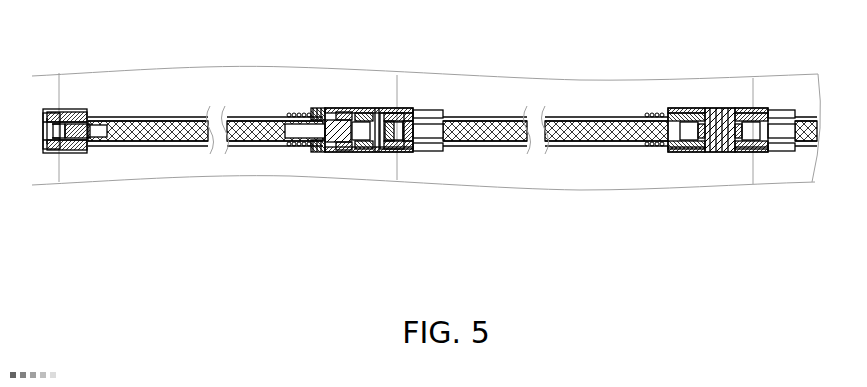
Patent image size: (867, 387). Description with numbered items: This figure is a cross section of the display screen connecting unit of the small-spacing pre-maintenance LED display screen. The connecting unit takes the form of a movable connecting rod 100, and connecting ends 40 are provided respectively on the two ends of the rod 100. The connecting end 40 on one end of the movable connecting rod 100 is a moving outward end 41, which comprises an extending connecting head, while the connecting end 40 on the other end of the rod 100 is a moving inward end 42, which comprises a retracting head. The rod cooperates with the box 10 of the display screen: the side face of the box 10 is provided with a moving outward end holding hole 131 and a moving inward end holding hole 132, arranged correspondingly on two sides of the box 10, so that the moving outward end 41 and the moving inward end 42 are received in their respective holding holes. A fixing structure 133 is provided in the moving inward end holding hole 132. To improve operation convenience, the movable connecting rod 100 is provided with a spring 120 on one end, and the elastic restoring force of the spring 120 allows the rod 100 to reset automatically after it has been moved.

The box 10 is at (248, 86).
The movable connecting rod 100 is at (268, 142).
The connecting end 40 is at (37, 133).
The moving outward end 41 is at (47, 109).
The moving outward end holding hole 131 is at (78, 109).
The fixing structure 133 is at (323, 108).
The moving inward end holding hole 132 is at (348, 110).
The moving inward end 42 is at (372, 108).
The spring 120 is at (657, 110).